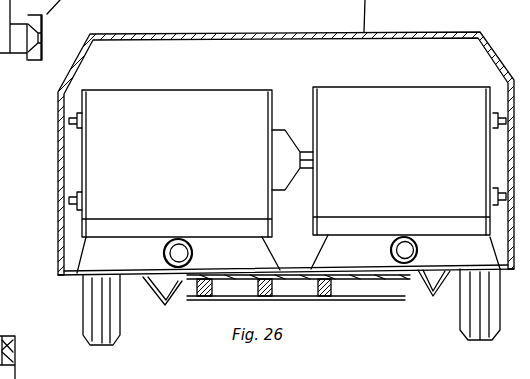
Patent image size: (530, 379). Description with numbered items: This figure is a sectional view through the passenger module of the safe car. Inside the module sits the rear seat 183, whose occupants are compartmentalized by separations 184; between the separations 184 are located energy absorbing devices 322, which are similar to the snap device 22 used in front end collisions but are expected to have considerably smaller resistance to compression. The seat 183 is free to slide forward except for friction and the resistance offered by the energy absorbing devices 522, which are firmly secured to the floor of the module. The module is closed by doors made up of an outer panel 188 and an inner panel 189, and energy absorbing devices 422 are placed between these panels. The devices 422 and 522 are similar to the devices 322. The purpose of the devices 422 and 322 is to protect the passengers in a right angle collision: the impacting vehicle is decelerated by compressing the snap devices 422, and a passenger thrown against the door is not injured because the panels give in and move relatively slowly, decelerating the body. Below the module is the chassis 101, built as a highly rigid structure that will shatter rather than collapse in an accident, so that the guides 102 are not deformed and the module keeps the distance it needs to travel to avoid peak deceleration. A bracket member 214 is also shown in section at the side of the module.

The door panel 188 is at (60, 163).
The energy absorbing device 422 is at (37, 226).
The rear seat 183 is at (288, 180).
The separation 184 is at (268, 108).
The door panel 189 is at (87, 178).
The energy absorbing device 322 is at (297, 128).
The energy absorbing device 522 is at (163, 253).
The guide 102 is at (164, 306).
The chassis 101 is at (358, 301).
The bracket member 214 is at (20, 53).
The snap device 22 is at (8, 336).